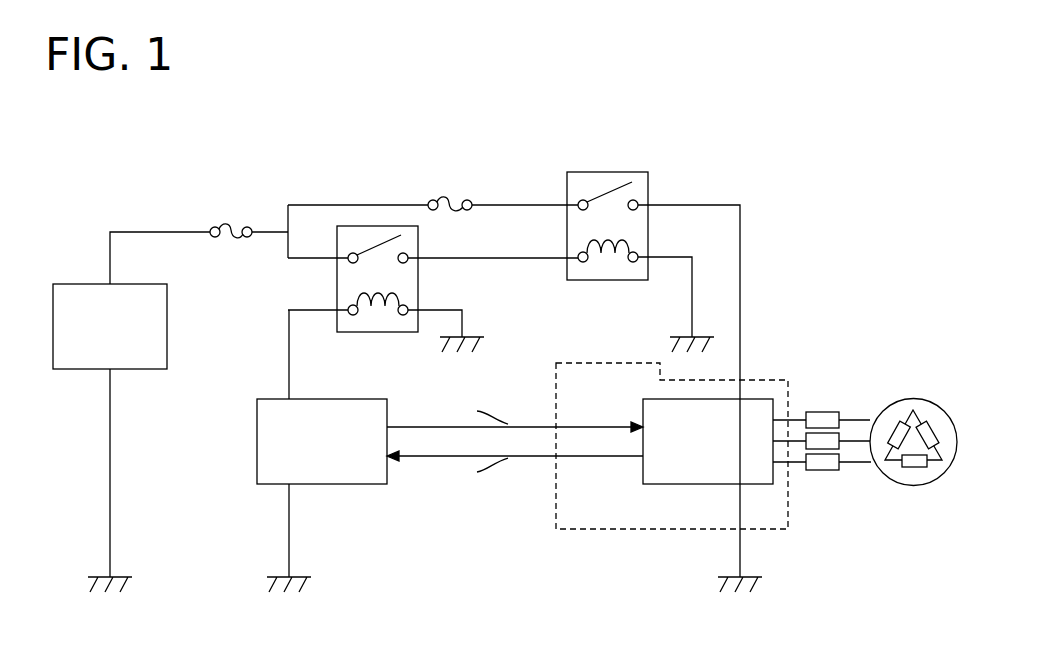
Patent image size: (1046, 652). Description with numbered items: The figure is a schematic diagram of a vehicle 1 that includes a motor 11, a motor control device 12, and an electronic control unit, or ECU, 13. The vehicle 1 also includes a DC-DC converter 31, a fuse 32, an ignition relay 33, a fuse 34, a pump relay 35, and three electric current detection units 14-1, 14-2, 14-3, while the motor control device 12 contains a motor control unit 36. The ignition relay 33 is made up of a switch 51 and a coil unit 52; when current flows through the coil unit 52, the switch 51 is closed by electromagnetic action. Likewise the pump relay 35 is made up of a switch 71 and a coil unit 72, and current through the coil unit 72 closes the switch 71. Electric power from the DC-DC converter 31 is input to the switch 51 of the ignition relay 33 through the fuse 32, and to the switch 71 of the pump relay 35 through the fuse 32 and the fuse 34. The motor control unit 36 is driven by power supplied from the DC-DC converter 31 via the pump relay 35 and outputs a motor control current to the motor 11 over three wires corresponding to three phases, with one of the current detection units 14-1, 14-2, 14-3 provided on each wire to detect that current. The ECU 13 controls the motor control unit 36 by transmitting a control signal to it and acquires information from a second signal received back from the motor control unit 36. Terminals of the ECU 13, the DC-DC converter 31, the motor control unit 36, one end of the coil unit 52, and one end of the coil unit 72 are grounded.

The vehicle 1 is at (887, 118).
The motor 11 is at (930, 402).
The motor control device 12 is at (556, 529).
The electronic control unit (ECU) 13 is at (257, 440).
The electric current detection unit 14-1 is at (817, 412).
The electric current detection unit 14-2 is at (840, 440).
The electric current detection unit 14-3 is at (825, 470).
The DC-DC converter 31 is at (150, 284).
The fuse 32 is at (228, 220).
The ignition relay 33 is at (418, 274).
The fuse 34 is at (450, 196).
The pump relay 35 is at (628, 172).
The motor control unit 36 is at (652, 399).
The switch 51 is at (376, 260).
The coil unit 52 is at (400, 295).
The switch 71 is at (600, 210).
The coil unit 72 is at (632, 242).